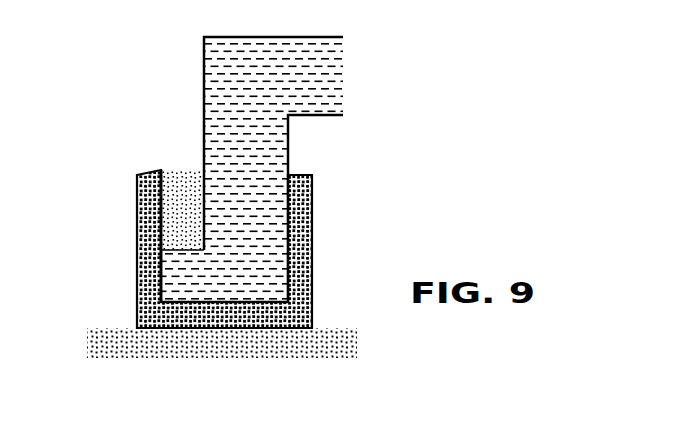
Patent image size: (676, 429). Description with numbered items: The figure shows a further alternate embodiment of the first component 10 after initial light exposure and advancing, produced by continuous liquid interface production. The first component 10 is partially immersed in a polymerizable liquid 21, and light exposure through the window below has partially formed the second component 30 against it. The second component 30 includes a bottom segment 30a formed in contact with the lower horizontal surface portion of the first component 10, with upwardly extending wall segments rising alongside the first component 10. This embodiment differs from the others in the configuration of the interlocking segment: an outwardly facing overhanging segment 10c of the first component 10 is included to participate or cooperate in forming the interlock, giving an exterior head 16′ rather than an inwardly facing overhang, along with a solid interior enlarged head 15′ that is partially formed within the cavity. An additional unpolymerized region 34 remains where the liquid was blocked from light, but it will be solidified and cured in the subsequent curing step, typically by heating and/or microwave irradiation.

The first component 10 is at (252, 169).
The outwardly facing overhanging segment 10c is at (182, 265).
The solid interior enlarged head 15′ is at (180, 210).
The exterior head 16′ is at (142, 278).
The polymerizable liquid 21 is at (222, 343).
The second component 30 is at (318, 207).
The bottom segment 30a is at (208, 314).
The unpolymerized region 34 is at (180, 189).